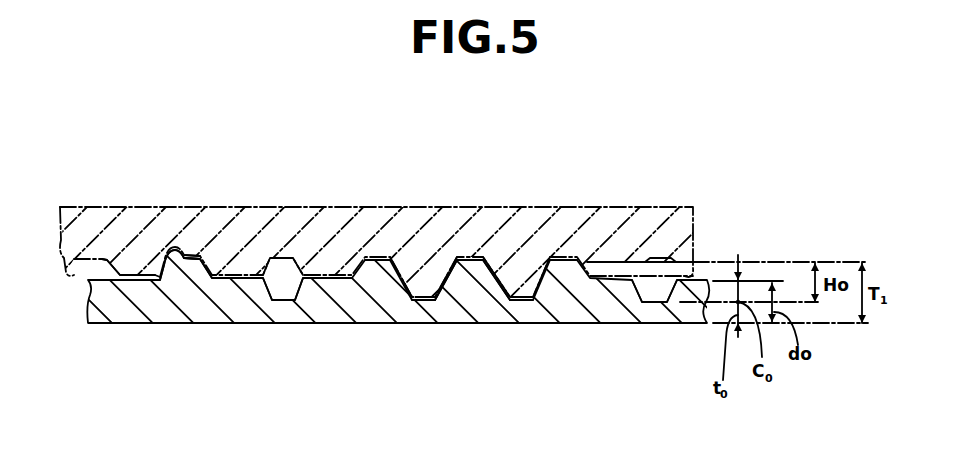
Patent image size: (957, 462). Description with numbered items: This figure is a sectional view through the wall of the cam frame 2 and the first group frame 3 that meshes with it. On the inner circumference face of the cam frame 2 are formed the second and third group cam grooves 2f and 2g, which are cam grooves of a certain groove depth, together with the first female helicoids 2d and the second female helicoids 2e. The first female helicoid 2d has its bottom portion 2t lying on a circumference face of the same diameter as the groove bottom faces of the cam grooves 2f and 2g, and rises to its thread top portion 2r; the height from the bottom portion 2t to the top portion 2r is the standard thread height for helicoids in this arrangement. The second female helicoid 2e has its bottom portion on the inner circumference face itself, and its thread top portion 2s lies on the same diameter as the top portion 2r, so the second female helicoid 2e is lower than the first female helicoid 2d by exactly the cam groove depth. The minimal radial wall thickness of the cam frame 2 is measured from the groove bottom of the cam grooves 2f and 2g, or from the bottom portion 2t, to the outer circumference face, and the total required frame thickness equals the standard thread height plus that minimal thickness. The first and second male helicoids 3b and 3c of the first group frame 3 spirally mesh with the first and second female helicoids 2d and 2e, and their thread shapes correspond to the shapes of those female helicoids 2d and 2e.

The cam frame 2 is at (683, 323).
The first group frame 3 is at (618, 207).
The thread top portion of first female helicoid 2r is at (377, 258).
The bottom portion of first female helicoid 2t is at (423, 300).
The first female helicoid 2d is at (472, 323).
The second female helicoid 2e is at (189, 264).
The thread top portion of second female helicoid 2s is at (165, 258).
The second group cam groove 2f is at (283, 300).
The third group cam groove 2g is at (651, 302).
The first male helicoid 3b is at (424, 296).
The second male helicoid 3c is at (298, 262).